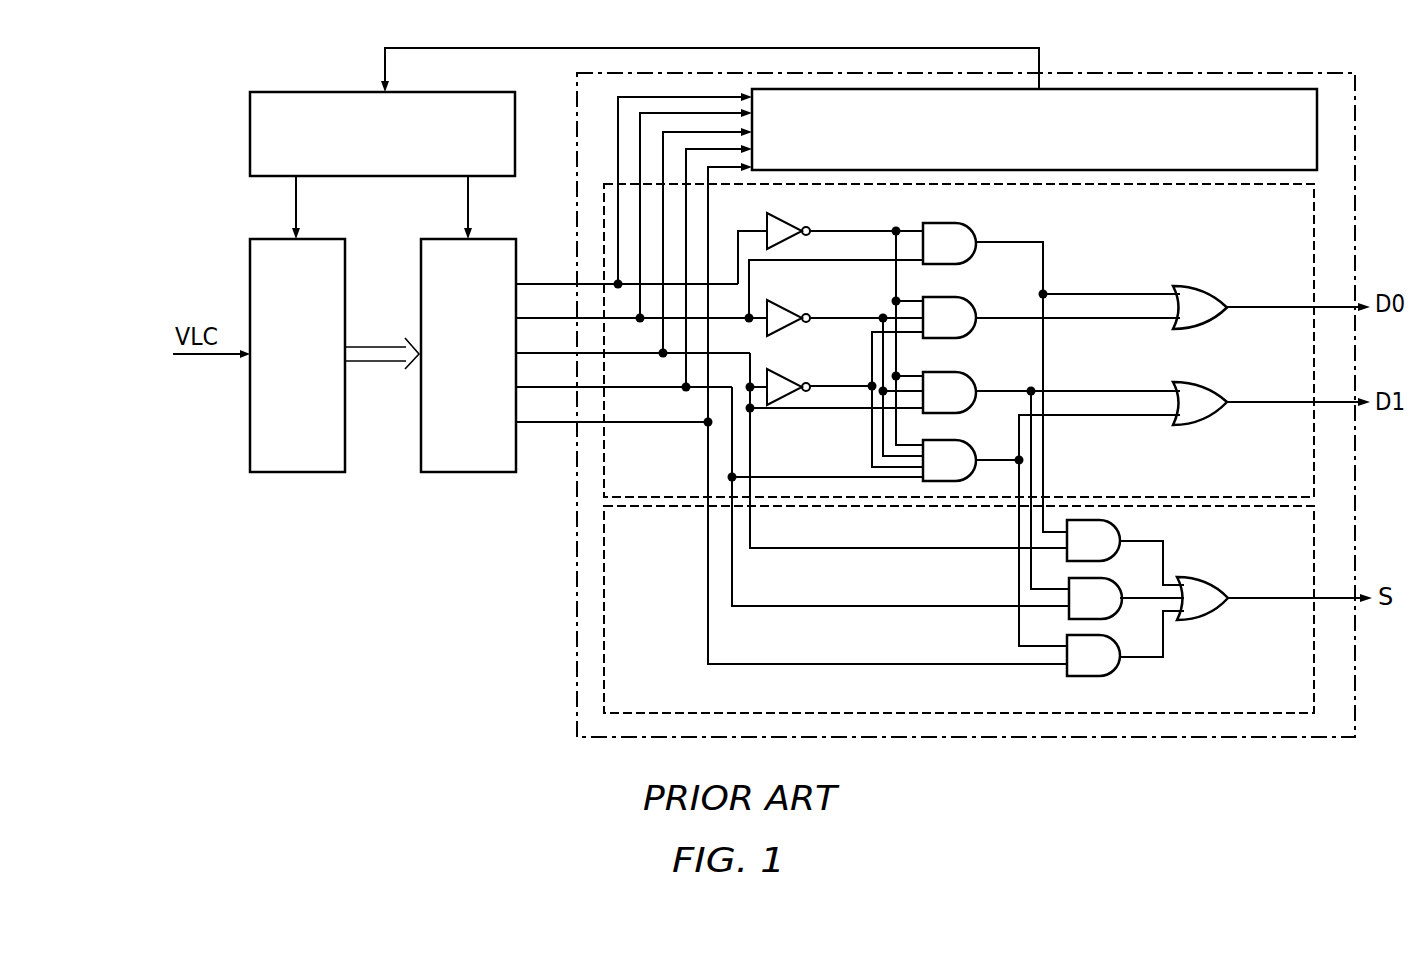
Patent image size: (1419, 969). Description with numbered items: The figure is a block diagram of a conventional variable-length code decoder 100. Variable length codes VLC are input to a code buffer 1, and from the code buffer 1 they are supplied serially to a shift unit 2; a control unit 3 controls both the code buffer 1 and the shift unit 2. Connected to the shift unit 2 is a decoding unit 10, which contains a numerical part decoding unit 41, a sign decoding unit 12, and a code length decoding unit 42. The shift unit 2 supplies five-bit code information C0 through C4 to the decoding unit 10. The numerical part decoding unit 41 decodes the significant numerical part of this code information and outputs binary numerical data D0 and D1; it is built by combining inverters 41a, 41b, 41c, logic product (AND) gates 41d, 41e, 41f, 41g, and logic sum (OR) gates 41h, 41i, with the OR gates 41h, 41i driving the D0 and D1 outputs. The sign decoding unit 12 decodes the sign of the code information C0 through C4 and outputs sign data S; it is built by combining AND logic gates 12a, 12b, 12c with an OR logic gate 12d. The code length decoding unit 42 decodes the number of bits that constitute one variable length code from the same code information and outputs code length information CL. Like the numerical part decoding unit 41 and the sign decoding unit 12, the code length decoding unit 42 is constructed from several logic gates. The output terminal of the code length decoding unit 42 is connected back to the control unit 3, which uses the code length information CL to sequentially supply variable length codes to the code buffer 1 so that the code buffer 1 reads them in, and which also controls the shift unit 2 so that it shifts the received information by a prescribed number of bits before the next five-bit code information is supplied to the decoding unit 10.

The code buffer 1 is at (308, 239).
The shift unit 2 is at (480, 239).
The control unit 3 is at (480, 92).
The decoding unit 10 is at (1148, 73).
The sign decoding unit 12 is at (1316, 560).
The AND logic gate 12a is at (1113, 536).
The AND logic gate 12b is at (1114, 594).
The AND logic gate 12c is at (1113, 653).
The OR logic gate 12d is at (1200, 577).
The numerical part decoding unit 41 is at (1316, 218).
The inverter 41a is at (790, 225).
The inverter 41b is at (790, 311).
The inverter 41c is at (790, 380).
The logic product gate 41d is at (957, 223).
The logic product gate 41e is at (957, 297).
The logic product gate 41f is at (957, 372).
The logic product gate 41g is at (957, 440).
The logic sum gate 41h is at (1197, 287).
The logic sum gate 41i is at (1197, 382).
The code length decoding unit 42 is at (1318, 128).
The decoder 100 is at (355, 703).